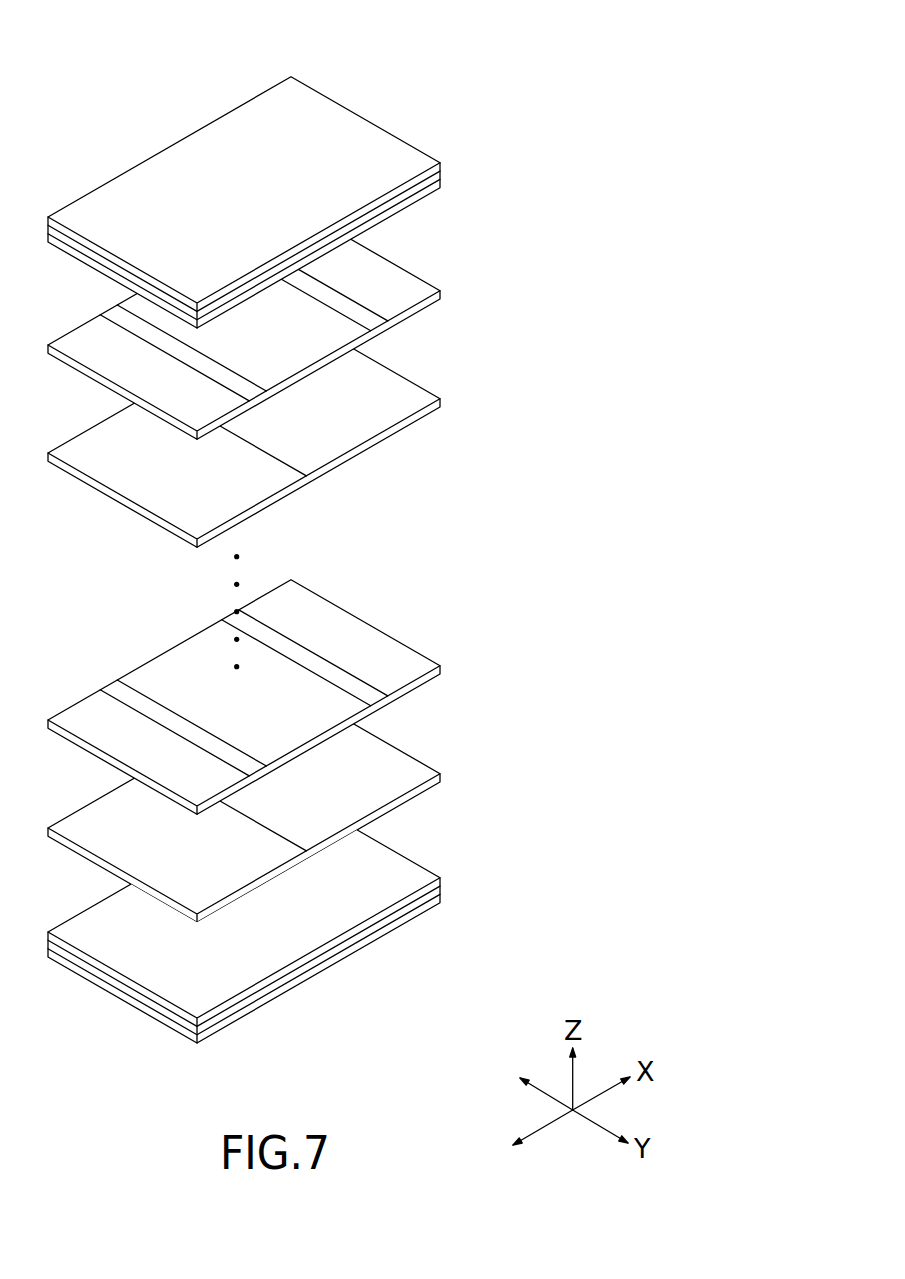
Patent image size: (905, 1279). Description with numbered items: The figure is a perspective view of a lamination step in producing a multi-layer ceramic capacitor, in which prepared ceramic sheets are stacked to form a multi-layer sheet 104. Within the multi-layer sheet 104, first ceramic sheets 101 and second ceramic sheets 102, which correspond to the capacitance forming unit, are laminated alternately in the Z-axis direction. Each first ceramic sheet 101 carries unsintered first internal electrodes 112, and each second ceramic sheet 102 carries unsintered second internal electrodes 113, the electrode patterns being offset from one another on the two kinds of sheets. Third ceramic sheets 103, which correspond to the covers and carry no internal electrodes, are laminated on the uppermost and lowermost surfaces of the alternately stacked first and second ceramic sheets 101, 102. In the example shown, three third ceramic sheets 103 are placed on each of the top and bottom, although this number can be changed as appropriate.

The multi-layer sheet 104 is at (298, 529).
The third ceramic sheet 103 is at (448, 175).
The first ceramic sheet 101 is at (452, 287).
The second ceramic sheet 102 is at (450, 397).
The unsintered first internal electrode 112 is at (80, 340).
The unsintered second internal electrode 113 is at (80, 448).